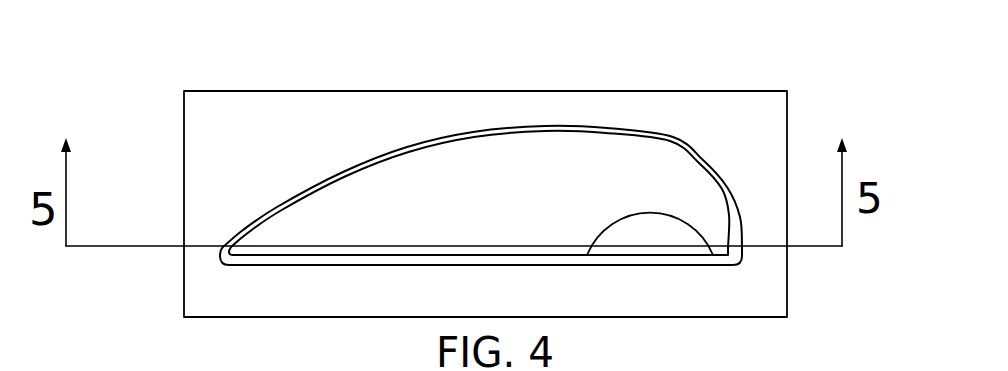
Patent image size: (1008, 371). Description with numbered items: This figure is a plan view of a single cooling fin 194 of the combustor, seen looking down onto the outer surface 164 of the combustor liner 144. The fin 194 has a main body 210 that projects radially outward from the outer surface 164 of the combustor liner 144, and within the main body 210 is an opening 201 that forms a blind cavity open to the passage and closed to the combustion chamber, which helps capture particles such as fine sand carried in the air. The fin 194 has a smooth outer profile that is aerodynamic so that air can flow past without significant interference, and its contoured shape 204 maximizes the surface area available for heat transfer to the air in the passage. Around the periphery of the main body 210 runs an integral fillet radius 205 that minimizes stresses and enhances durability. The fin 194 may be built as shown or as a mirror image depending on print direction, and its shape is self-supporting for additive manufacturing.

The combustor liner 144 is at (178, 147).
The outer surface 164 is at (273, 153).
The cooling fin 194 is at (518, 163).
The contoured shape 204 is at (555, 210).
The integral fillet radius 205 is at (706, 160).
The main body 210 is at (467, 218).
The opening 201 is at (653, 222).